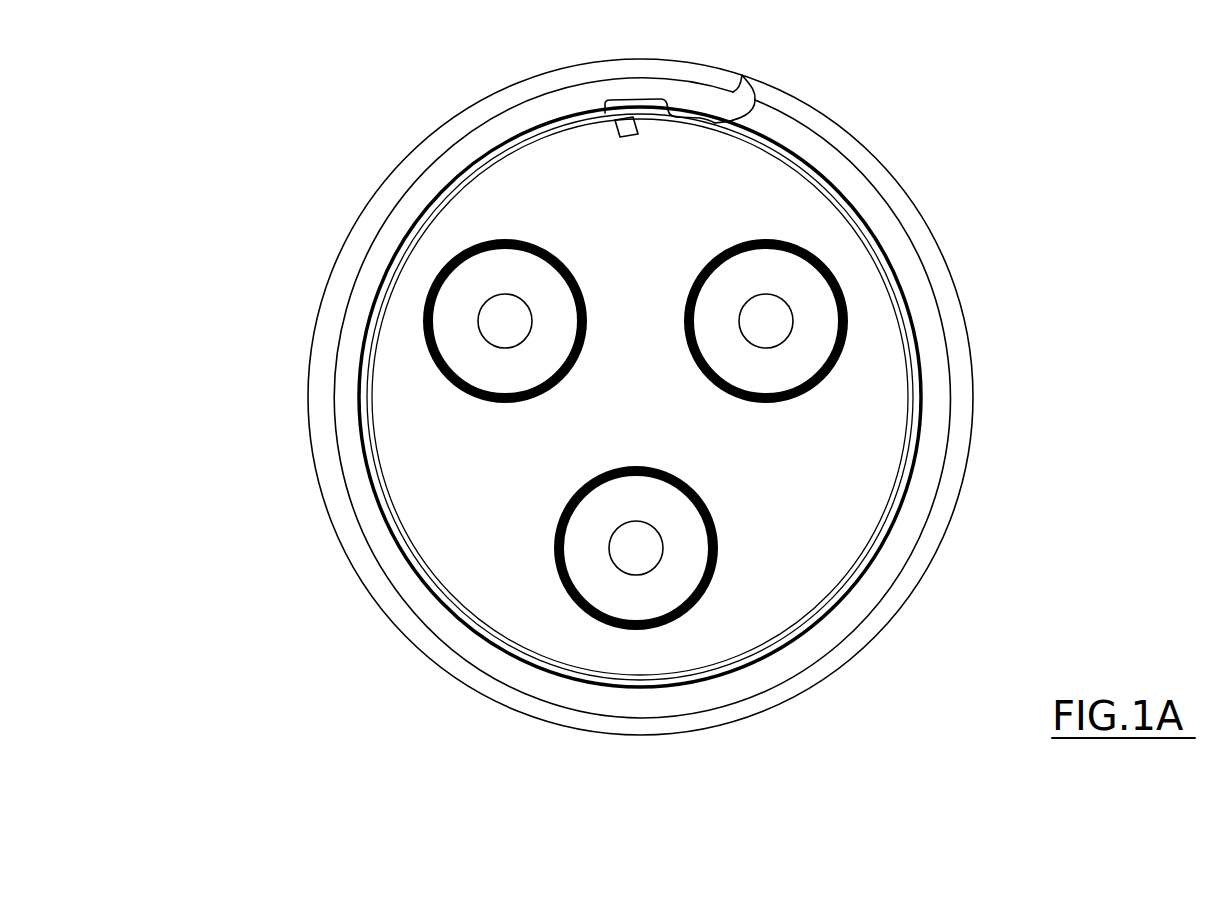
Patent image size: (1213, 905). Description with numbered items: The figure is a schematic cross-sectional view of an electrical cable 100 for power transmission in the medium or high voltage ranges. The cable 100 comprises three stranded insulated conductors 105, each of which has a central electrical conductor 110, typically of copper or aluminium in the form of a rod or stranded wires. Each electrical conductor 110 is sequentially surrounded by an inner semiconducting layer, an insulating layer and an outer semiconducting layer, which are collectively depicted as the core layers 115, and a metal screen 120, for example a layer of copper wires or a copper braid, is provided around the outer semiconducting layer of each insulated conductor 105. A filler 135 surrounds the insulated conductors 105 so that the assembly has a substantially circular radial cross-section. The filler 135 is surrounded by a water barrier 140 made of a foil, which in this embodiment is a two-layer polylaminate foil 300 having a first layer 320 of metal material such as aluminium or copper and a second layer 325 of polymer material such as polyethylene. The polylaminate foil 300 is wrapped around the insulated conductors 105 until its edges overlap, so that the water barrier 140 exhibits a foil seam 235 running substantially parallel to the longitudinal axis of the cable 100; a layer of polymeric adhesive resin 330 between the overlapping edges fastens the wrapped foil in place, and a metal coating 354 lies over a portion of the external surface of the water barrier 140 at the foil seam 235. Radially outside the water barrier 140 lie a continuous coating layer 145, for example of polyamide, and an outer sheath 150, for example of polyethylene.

The electrical cable 100 is at (698, 417).
The insulated conductor 105 is at (632, 416).
The electrical conductor 110 is at (498, 340).
The core layers 115 is at (565, 337).
The metal screen 120 is at (453, 374).
The filler 135 is at (795, 612).
The water barrier 140 is at (430, 603).
The continuous coating layer 145 is at (343, 468).
The outer sheath 150 is at (972, 432).
The foil seam 235 is at (617, 123).
The polylaminate foil 300 is at (880, 255).
The first layer 320 is at (456, 197).
The second layer 325 is at (397, 248).
The layer of polymeric adhesive resin 330 is at (634, 124).
The metal coating 354 is at (742, 75).